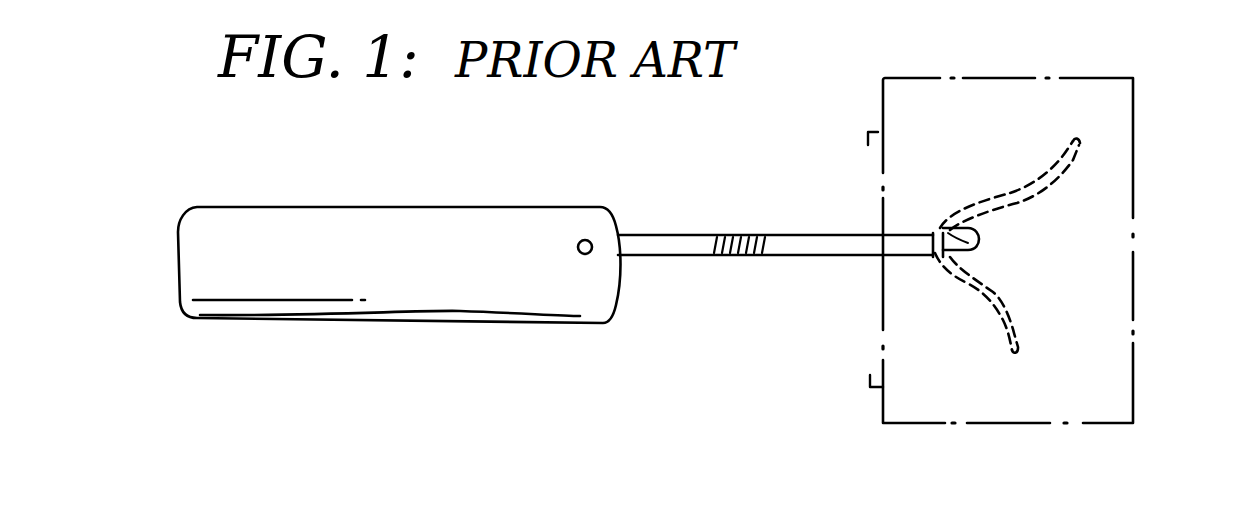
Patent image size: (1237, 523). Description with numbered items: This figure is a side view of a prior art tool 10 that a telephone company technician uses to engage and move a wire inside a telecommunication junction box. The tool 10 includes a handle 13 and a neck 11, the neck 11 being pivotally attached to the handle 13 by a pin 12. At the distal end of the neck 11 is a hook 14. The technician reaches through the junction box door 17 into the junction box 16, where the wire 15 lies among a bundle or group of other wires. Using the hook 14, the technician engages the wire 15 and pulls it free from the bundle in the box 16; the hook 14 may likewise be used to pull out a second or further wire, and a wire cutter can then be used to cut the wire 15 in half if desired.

The tool 10 is at (376, 191).
The neck 11 is at (697, 235).
The pin 12 is at (578, 247).
The handle 13 is at (196, 233).
The hook 14 is at (960, 229).
The wire 15 is at (1008, 193).
The junction box 16 is at (1135, 280).
The junction box door 17 is at (870, 385).